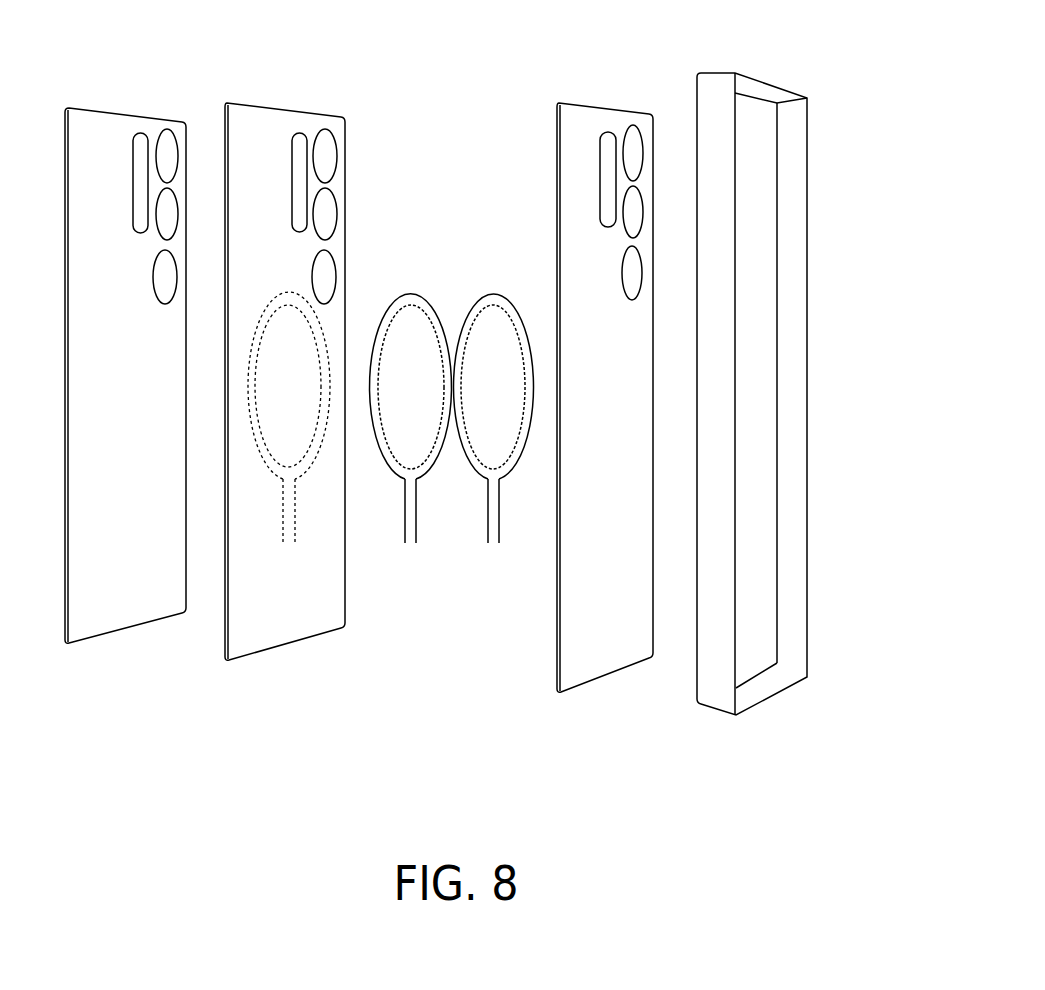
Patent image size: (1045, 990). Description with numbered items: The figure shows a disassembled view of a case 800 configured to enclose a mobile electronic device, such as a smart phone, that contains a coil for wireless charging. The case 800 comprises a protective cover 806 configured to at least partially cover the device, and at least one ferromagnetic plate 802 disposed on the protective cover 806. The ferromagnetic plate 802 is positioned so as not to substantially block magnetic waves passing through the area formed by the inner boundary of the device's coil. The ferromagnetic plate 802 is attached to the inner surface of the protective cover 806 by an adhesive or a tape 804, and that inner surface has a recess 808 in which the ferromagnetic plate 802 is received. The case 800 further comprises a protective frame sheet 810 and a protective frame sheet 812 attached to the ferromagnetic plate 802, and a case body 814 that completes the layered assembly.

The case 800 is at (806, 27).
The ferromagnetic plate 802 is at (492, 543).
The tape 804 is at (410, 543).
The protective cover 806 is at (273, 617).
The recess 808 is at (288, 545).
The protective frame sheet 810 is at (115, 615).
The protective frame sheet 812 is at (615, 662).
The case body 814 is at (720, 692).